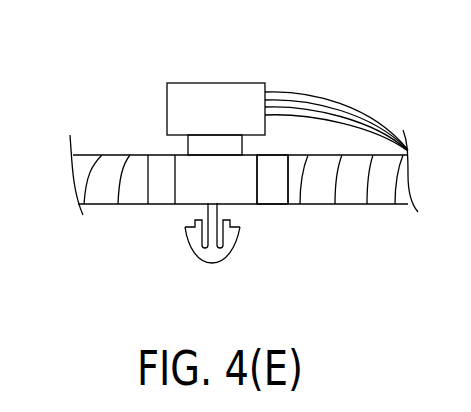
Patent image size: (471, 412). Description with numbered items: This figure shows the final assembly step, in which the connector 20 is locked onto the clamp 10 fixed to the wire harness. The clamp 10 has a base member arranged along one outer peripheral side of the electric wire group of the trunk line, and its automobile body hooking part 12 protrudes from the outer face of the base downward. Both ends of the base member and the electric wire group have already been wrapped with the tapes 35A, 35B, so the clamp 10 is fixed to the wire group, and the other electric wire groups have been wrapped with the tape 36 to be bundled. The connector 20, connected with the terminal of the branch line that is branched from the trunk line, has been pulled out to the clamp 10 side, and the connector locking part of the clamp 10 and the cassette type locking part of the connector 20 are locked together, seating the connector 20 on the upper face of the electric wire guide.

The clamp 10 is at (219, 265).
The automobile body hooking part 12 is at (200, 262).
The connector 20 is at (228, 83).
The tape 35A is at (160, 205).
The tape 35B is at (277, 205).
The tape 36 is at (357, 205).